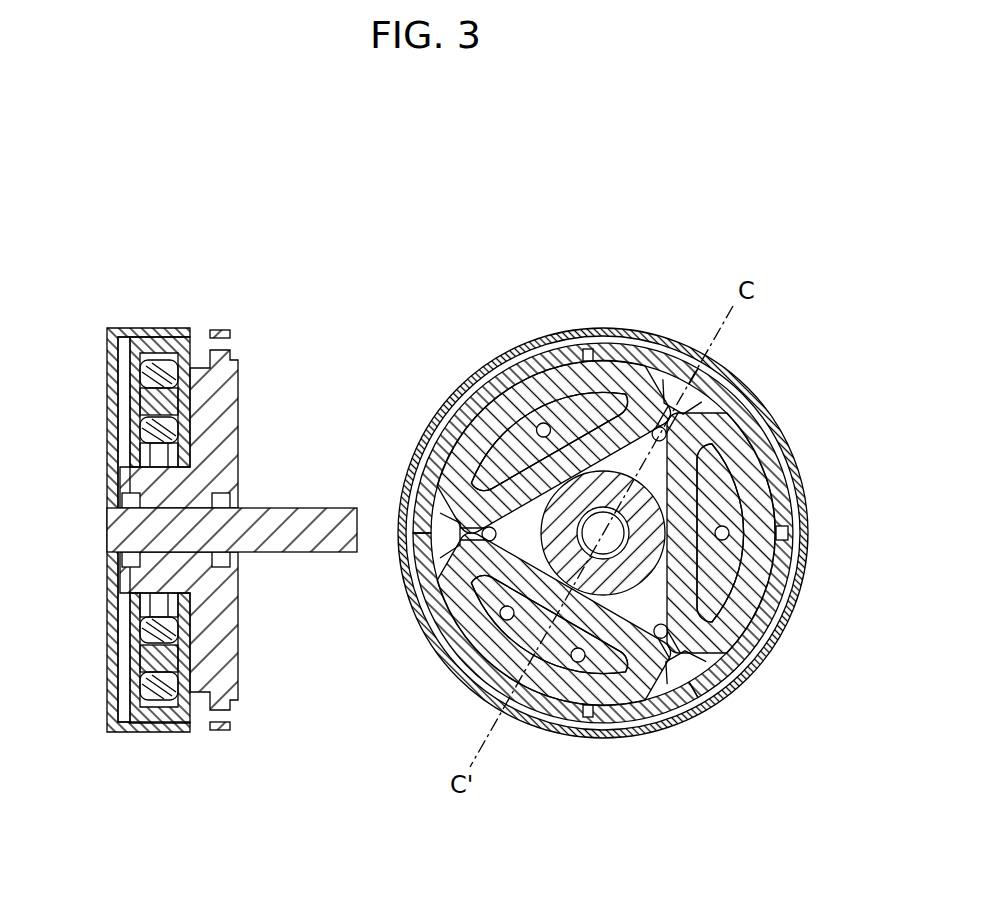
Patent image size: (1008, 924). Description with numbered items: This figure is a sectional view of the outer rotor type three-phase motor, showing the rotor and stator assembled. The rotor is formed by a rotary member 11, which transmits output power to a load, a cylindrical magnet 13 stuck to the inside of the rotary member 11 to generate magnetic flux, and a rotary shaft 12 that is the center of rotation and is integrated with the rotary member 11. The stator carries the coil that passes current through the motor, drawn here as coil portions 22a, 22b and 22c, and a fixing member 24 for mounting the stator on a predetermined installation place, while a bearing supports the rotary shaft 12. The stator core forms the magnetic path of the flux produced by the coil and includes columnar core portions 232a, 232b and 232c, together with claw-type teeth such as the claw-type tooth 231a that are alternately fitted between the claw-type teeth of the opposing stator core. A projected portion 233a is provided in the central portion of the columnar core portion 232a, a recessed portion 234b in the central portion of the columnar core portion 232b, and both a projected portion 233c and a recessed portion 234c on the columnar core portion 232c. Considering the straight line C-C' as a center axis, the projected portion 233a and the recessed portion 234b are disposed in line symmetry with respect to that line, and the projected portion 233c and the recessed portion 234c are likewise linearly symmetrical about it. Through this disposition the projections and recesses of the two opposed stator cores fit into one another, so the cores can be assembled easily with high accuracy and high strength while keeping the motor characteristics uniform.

The rotary member 11 is at (180, 330).
The rotary shaft 12 is at (297, 508).
The cylindrical magnet 13 is at (186, 713).
The outer casing 22a is at (751, 401).
The bracket plate 22b is at (147, 372).
The bracket plate 22c is at (157, 702).
The fixing member 24 is at (240, 400).
The claw-type tooth 231a is at (728, 482).
The columnar core portion 232a is at (762, 655).
The columnar core portion 232b is at (557, 402).
The columnar core portion 232c is at (545, 715).
The projected portion 233a is at (732, 535).
The projected portion 233c is at (472, 668).
The recessed portion 234b is at (455, 403).
The recessed portion 234c is at (626, 730).